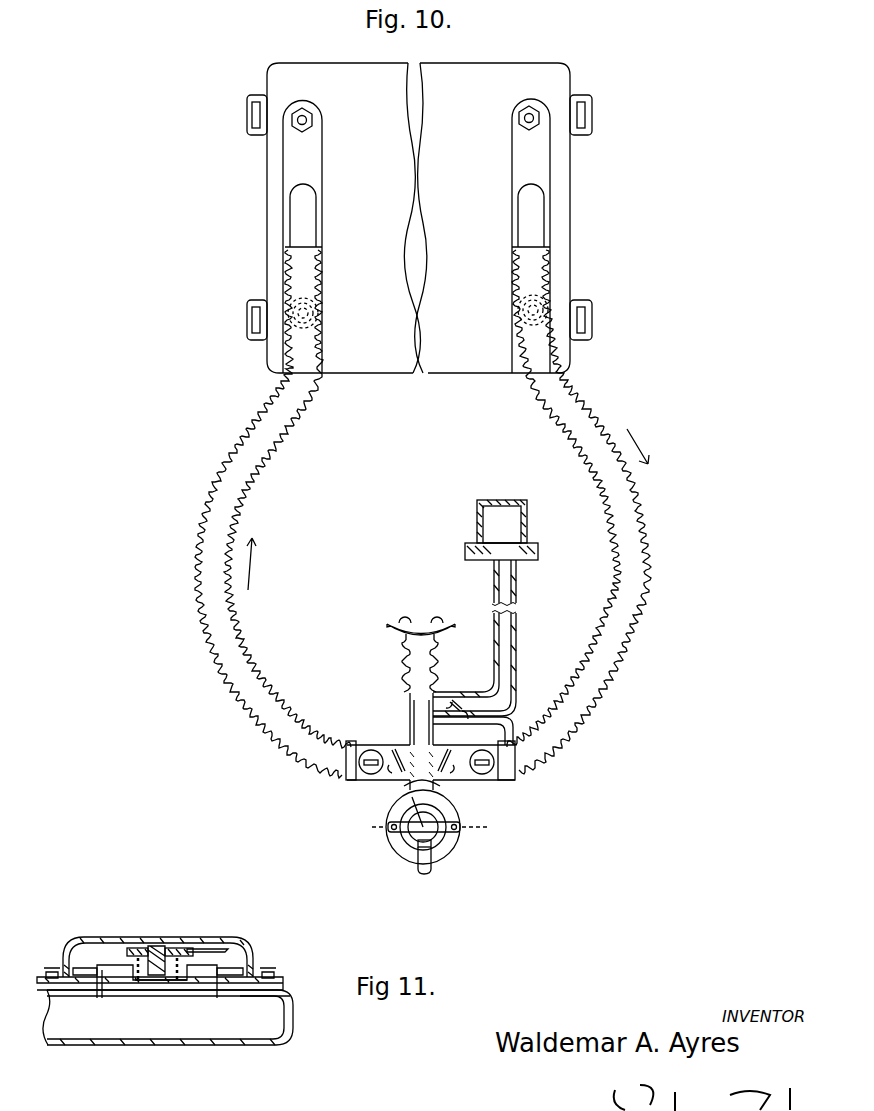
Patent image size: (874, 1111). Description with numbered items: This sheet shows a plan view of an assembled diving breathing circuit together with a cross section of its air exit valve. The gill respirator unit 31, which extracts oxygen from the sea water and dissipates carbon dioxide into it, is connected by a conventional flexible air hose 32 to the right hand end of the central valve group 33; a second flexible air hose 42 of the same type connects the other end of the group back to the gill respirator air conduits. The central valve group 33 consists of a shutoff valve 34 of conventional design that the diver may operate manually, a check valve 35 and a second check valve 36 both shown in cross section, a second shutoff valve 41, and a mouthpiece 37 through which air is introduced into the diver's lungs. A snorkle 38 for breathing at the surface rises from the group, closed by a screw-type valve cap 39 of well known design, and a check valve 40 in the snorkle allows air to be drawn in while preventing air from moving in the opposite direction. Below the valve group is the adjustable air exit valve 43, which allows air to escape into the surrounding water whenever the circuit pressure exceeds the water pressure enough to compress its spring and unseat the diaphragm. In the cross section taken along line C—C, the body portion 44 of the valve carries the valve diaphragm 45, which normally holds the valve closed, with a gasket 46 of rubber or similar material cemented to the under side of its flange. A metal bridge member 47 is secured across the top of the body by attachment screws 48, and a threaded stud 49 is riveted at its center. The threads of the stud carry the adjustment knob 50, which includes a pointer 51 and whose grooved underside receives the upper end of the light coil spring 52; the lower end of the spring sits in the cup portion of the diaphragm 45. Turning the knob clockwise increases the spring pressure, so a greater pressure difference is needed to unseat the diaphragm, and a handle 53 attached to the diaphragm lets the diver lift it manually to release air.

In FIG. 10, the gill respirator unit 31 is at (480, 157).
In FIG. 10, the flexible air hose 32 is at (625, 520).
In FIG. 10, the central valve group 33 is at (445, 780).
In FIG. 10, the shutoff valve 34 is at (510, 748).
In FIG. 10, the check valve 35 is at (438, 775).
In FIG. 10, the second check valve 36 is at (395, 775).
In FIG. 10, the mouthpiece 37 is at (423, 625).
In FIG. 10, the snorkle 38 is at (503, 578).
In FIG. 10, the screw-type valve cap 39 is at (478, 497).
In FIG. 10, the check valve 40 is at (473, 722).
In FIG. 10, the second shutoff valve 41 is at (385, 726).
In FIG. 10, the flexible air hose 42 is at (220, 517).
In FIG. 10, the adjustable air exit valve 43 is at (445, 840).
In FIG. 11, the adjustable air exit valve 43 is at (265, 1022).
In FIG. 11, the body portion 44 is at (210, 1044).
In FIG. 11, the valve diaphragm 45 is at (195, 965).
In FIG. 11, the gasket 46 is at (85, 960).
In FIG. 11, the bridge member 47 is at (222, 938).
In FIG. 11, the attachment screws 48 is at (263, 970).
In FIG. 11, the threaded stud 49 is at (165, 957).
In FIG. 10, the adjustment knob 50 is at (412, 832).
In FIG. 11, the adjustment knob 50 is at (128, 945).
In FIG. 11, the pointer 51 is at (200, 946).
In FIG. 11, the coil spring 52 is at (140, 978).
In FIG. 10, the handle 53 is at (430, 873).